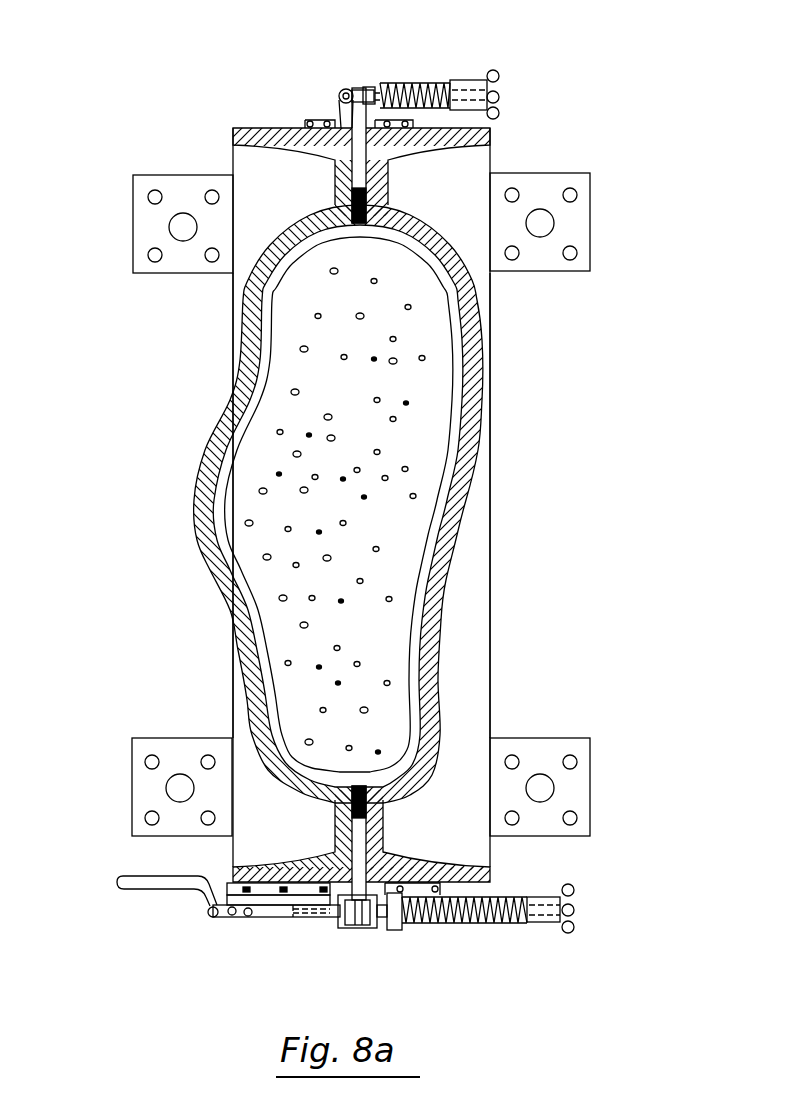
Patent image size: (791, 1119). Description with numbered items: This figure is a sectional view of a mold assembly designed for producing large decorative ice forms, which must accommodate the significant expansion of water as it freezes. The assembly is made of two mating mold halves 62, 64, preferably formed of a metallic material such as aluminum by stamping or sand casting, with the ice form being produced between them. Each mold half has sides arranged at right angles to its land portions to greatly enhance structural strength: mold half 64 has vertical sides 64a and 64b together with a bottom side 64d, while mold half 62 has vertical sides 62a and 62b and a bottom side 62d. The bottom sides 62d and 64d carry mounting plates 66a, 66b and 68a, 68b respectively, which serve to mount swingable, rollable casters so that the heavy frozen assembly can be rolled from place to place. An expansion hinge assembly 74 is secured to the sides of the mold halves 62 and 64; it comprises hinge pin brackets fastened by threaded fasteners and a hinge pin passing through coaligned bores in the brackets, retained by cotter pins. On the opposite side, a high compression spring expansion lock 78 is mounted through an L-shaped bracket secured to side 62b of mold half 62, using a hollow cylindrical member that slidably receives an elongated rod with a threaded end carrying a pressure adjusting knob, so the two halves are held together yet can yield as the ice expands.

The mold half 62 is at (488, 491).
The vertical side 62a is at (483, 132).
The vertical side 62b is at (477, 876).
The bottom side 62d is at (477, 658).
The mold half 64 is at (274, 480).
The vertical side 64a is at (275, 143).
The vertical side 64b is at (230, 866).
The bottom side 64d is at (242, 733).
The plate 66a is at (575, 223).
The plate 66b is at (583, 784).
The plate 68a is at (150, 230).
The plate 68b is at (143, 792).
The expansion hinge assembly 74 is at (233, 452).
The high compression spring expansion lock 78 is at (397, 937).